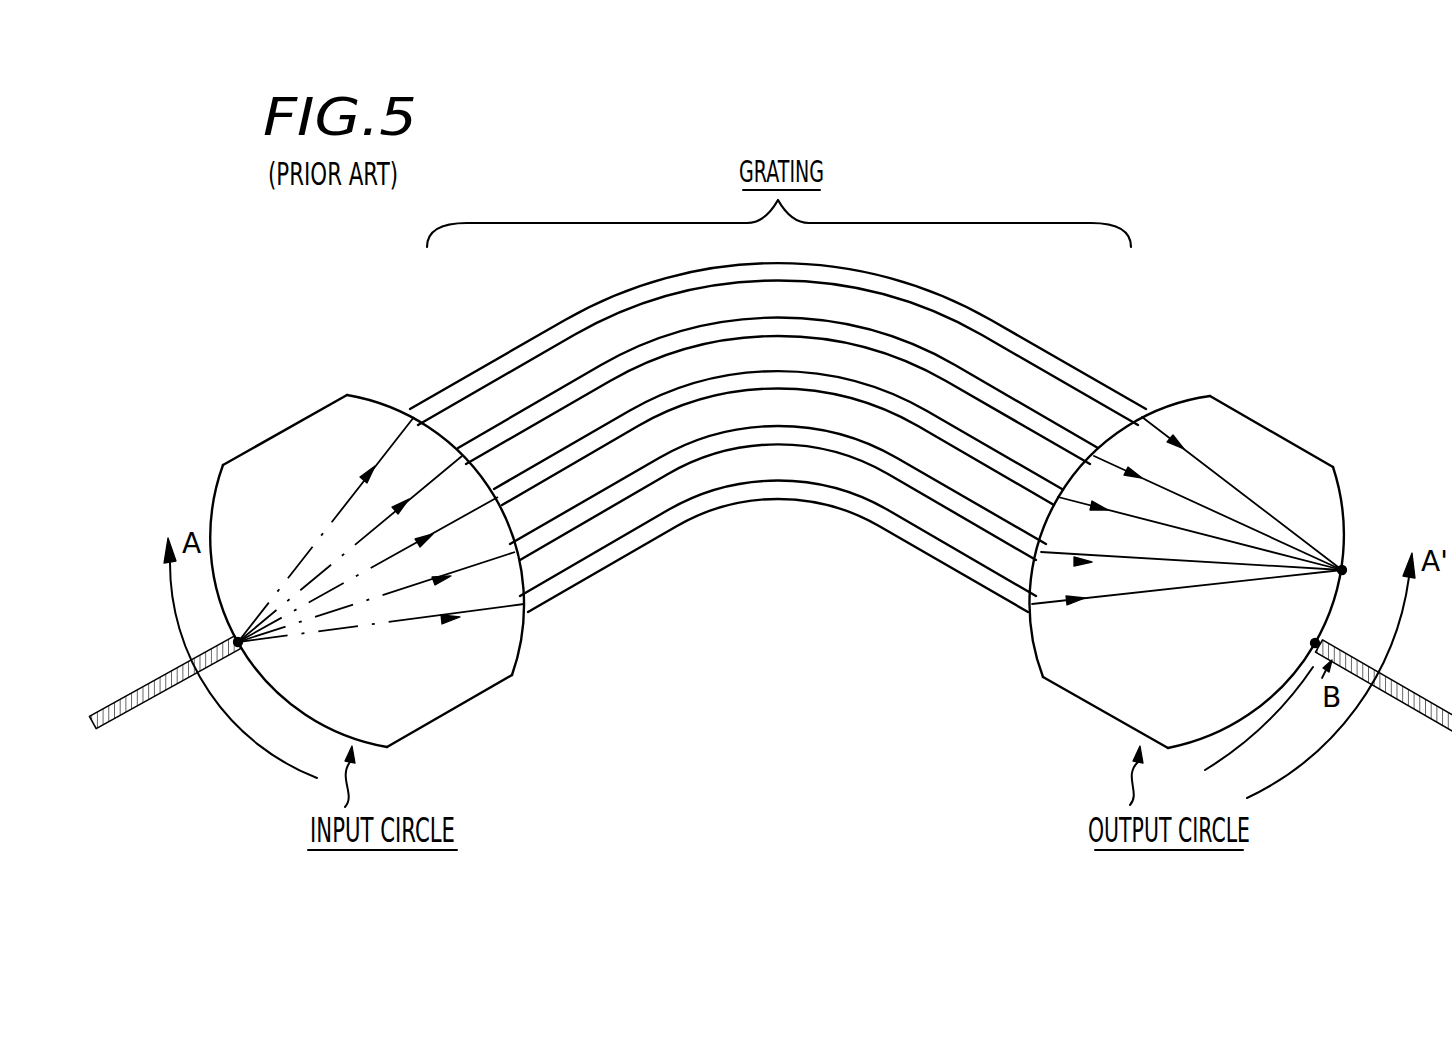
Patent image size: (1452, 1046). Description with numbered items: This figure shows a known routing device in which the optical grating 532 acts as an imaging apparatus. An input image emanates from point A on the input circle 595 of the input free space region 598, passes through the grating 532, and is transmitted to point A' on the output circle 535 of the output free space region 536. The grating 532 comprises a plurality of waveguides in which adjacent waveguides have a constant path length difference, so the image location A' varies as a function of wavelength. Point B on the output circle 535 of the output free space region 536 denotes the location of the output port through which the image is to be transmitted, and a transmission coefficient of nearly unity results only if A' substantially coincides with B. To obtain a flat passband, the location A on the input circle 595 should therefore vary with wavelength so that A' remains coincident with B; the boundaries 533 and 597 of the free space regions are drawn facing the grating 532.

The optical grating 532 is at (775, 503).
The input side of output coupler (left arc of output lens) 533 is at (1192, 400).
The output circle 535 is at (1360, 502).
The output free space region 536 is at (1268, 440).
The input circle 595 is at (210, 503).
The grating side arc of input coupler 597 is at (366, 398).
The input free space region 598 is at (285, 432).